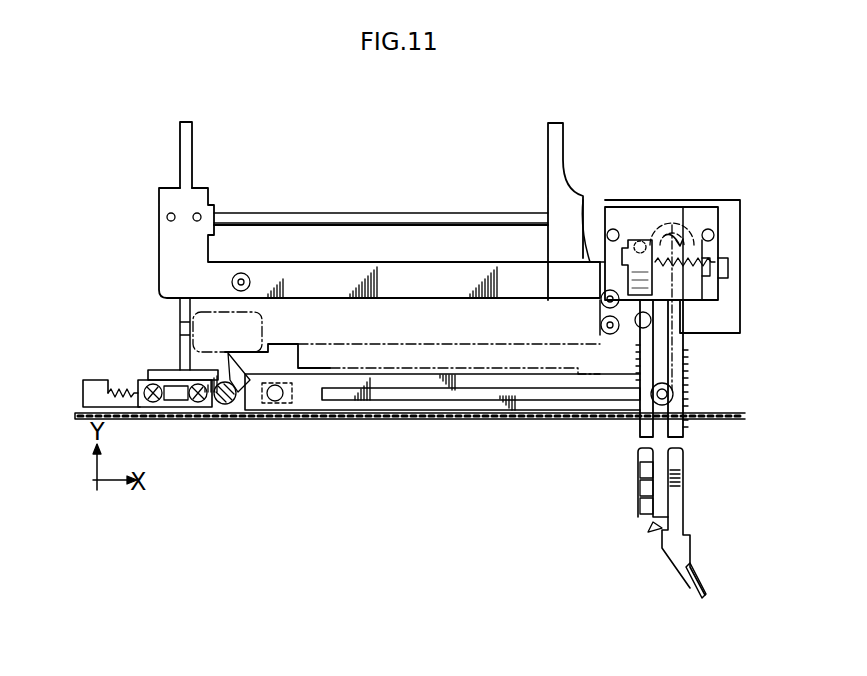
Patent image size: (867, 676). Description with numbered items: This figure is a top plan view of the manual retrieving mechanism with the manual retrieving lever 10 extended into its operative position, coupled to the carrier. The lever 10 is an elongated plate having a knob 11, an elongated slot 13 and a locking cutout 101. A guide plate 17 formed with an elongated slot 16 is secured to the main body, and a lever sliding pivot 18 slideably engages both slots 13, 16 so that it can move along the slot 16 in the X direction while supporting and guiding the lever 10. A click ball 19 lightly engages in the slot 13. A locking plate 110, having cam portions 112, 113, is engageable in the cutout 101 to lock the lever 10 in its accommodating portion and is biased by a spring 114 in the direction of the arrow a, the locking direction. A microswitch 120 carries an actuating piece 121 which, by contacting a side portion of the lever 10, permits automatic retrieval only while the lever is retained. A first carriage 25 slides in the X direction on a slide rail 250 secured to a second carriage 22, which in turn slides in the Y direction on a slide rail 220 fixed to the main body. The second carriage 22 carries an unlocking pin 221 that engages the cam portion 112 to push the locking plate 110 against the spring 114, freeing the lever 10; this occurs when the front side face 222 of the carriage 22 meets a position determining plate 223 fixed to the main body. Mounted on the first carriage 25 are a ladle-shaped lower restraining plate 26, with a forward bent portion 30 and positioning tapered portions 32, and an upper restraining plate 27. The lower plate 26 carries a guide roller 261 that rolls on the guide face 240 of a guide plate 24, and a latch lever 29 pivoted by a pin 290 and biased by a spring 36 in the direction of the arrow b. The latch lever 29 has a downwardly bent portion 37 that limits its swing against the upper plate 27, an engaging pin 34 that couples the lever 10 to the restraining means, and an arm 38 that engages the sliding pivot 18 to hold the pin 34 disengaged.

The slide rail 220 is at (186, 140).
The second carriage 22 is at (172, 248).
The front side face 222 is at (162, 292).
The unlocking pin 221 is at (238, 272).
The slide rail 250 is at (482, 212).
The first carriage 25 is at (558, 150).
The microswitch 120 is at (195, 312).
The position determining plate 223 is at (168, 369).
The spring 114 is at (112, 385).
The locking plate 110 is at (178, 405).
The arrow a is at (143, 425).
The cam portion 112 is at (232, 404).
The actuating piece 121 is at (288, 346).
The guide plate 17 is at (345, 407).
The cam portion 113 is at (265, 402).
The click ball 19 is at (300, 410).
The elongated slot 16 is at (407, 396).
The guide plate 24 is at (520, 364).
The guide face 240 is at (582, 376).
The arrow b is at (680, 240).
The upper restraining plate 27 is at (692, 212).
The downwardly bent portion 37 is at (586, 235).
The latch lever 29 is at (634, 240).
The engaging pin 34 is at (670, 222).
The forward bent portion 30 is at (650, 208).
The spring 36 is at (722, 262).
The arm 38 is at (716, 294).
The positioning tapered portions 32 is at (712, 326).
The guide roller 261 is at (603, 305).
The lower restraining plate 26 is at (698, 332).
The pin 290 is at (643, 330).
The lever sliding pivot 18 is at (674, 393).
The elongated slot 13 is at (662, 496).
The manual retrieving lever 10 is at (680, 460).
The locking cutout 101 is at (648, 528).
The knob 11 is at (696, 575).